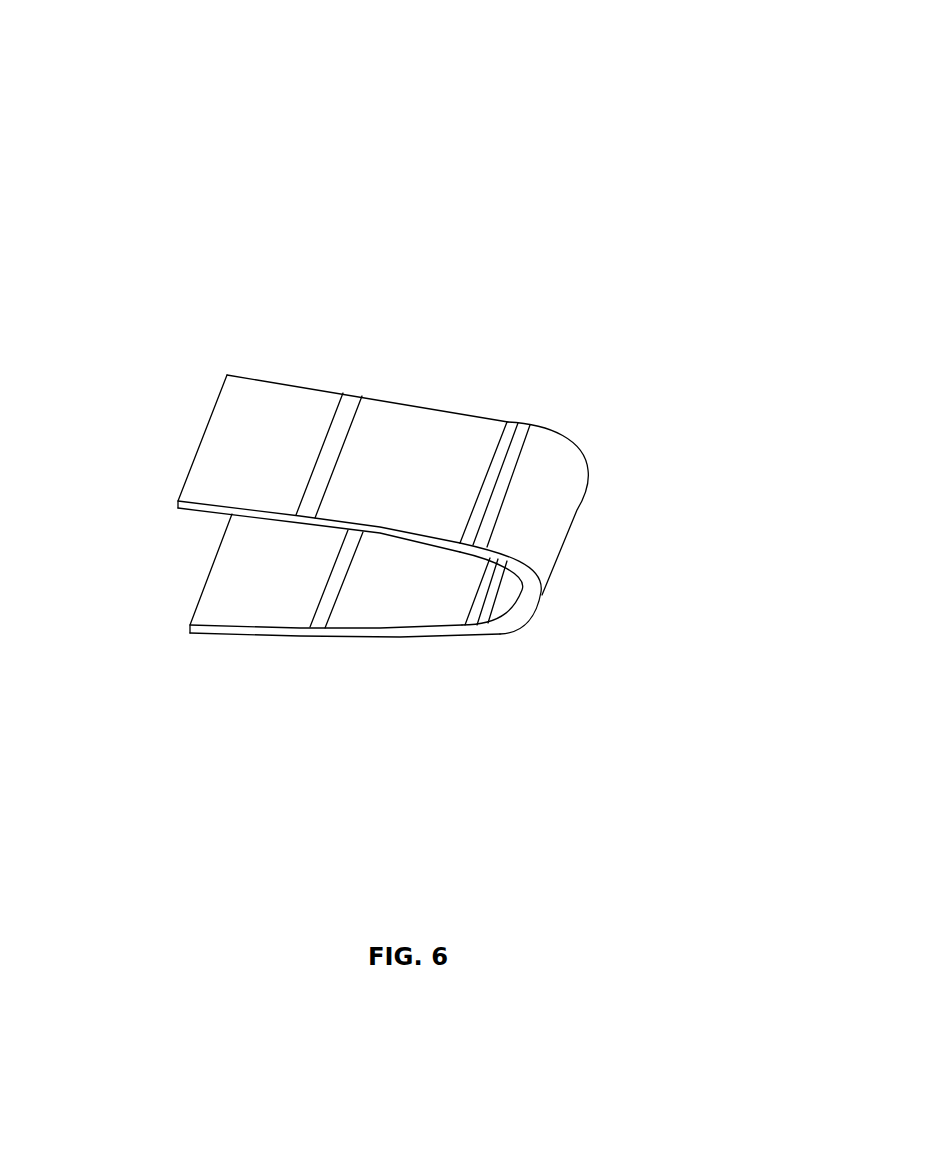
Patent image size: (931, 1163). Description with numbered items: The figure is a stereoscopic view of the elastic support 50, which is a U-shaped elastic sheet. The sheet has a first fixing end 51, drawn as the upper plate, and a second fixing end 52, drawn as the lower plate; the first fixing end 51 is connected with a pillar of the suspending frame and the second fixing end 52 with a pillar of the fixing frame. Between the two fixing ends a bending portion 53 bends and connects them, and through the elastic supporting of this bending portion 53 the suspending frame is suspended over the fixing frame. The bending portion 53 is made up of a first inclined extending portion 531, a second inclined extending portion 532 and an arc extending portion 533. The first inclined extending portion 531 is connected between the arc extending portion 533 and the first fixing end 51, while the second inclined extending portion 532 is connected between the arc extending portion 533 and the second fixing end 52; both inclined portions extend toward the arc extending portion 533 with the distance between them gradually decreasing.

The elastic support 50 is at (447, 58).
The first fixing end 51 is at (220, 432).
The second fixing end 52 is at (217, 600).
The bending portion 53 is at (717, 362).
The first inclined extending portion 531 is at (453, 425).
The second inclined extending portion 532 is at (428, 612).
The arc extending portion 533 is at (557, 525).